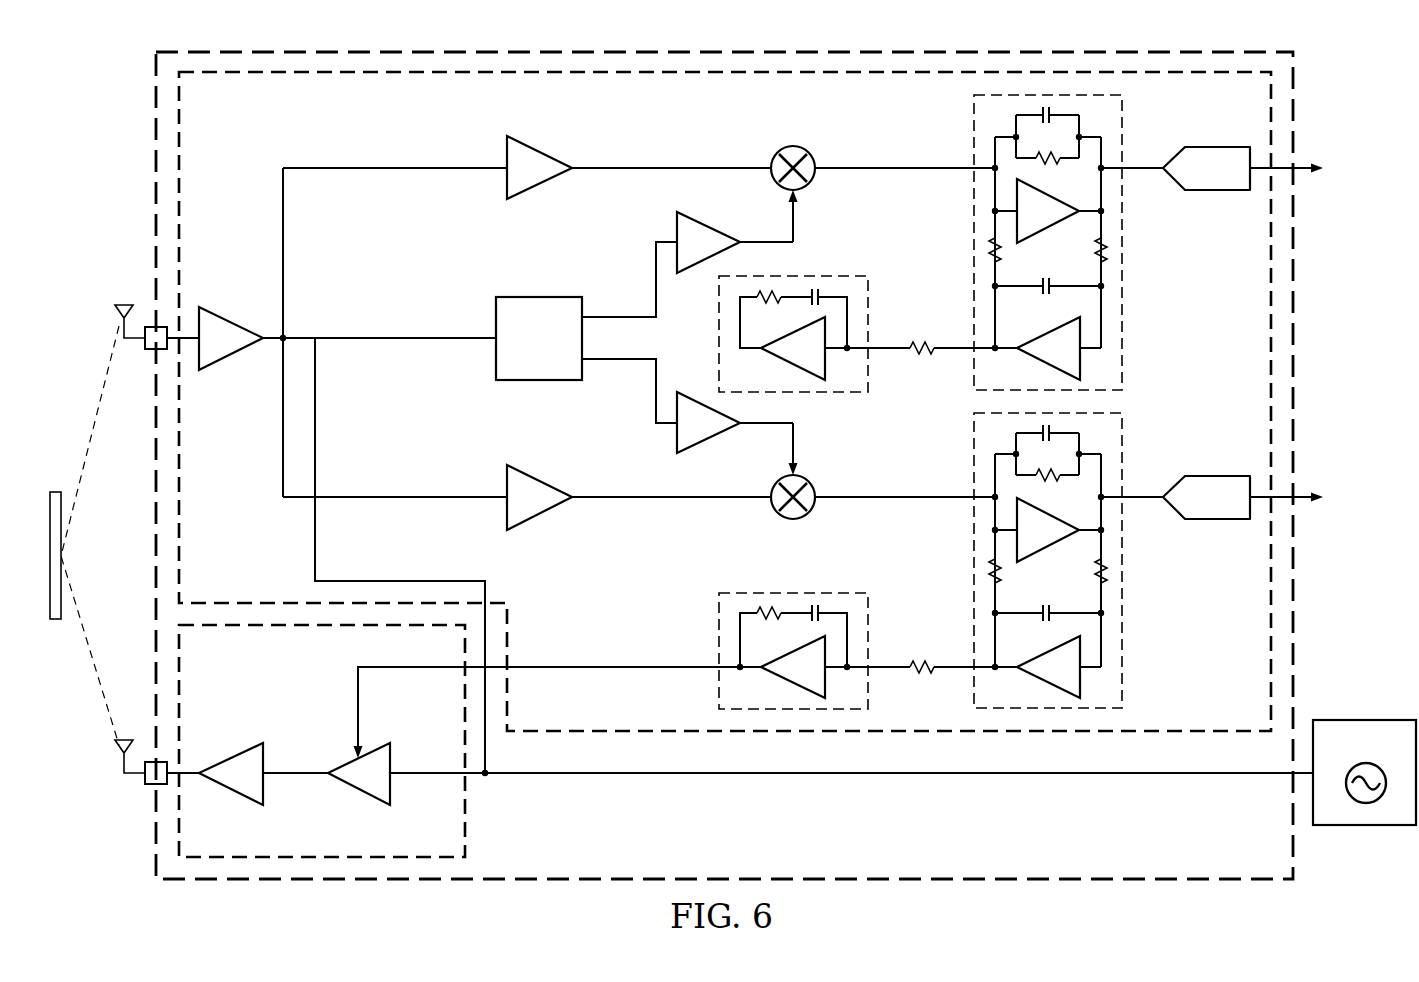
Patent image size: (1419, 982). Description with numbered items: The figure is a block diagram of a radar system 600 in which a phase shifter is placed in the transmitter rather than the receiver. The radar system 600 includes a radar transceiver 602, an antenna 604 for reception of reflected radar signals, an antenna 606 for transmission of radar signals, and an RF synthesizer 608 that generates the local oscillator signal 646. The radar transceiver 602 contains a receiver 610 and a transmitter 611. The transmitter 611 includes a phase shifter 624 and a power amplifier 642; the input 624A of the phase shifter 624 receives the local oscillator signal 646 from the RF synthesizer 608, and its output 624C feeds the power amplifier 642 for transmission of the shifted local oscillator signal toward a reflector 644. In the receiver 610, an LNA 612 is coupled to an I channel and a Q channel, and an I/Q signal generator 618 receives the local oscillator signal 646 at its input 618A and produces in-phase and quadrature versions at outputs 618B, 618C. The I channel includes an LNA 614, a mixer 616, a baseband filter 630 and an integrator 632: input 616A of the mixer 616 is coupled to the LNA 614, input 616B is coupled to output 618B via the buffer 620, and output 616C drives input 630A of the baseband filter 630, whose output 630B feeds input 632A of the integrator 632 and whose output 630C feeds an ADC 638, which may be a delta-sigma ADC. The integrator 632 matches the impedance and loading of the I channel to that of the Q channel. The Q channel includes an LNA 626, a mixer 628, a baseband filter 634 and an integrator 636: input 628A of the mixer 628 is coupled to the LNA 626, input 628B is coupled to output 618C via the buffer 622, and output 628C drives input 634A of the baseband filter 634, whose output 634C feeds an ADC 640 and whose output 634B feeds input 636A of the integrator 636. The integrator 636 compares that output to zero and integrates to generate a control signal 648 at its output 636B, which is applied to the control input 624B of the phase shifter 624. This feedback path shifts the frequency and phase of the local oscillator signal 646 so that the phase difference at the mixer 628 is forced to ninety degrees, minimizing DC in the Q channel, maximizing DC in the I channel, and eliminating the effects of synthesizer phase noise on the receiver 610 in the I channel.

The radar system 600 is at (712, 465).
The radar transceiver 602 is at (1298, 258).
The antenna 604 is at (122, 305).
The antenna 606 is at (116, 757).
The RF synthesizer 608 is at (1368, 825).
The receiver 610 is at (250, 415).
The transmitter 611 is at (472, 808).
The LNA 612 is at (229, 321).
The LNA 614 is at (570, 134).
The mixer 616 is at (785, 148).
The input 616A is at (764, 182).
The input 616B is at (800, 215).
The output 616C is at (822, 161).
The I/Q signal generator 618 is at (536, 297).
The input 618A is at (496, 331).
The output 618B is at (592, 313).
The output 618C is at (590, 381).
The buffer 620 is at (677, 227).
The buffer 622 is at (677, 441).
The phase shifter 624 is at (360, 796).
The input 624A is at (410, 777).
The control input 624B is at (362, 742).
The output 624C is at (318, 771).
The LNA 626 is at (553, 522).
The mixer 628 is at (786, 521).
The input 628A is at (776, 486).
The input 628B is at (798, 453).
The output 628C is at (808, 512).
The baseband filter 630 is at (1128, 232).
The input 630A is at (945, 165).
The output 630B is at (945, 345).
The output 630C is at (1144, 142).
The integrator 632 is at (878, 280).
The input 632A is at (896, 355).
The baseband filter 634 is at (1128, 579).
The input 634A is at (945, 493).
The output 634B is at (945, 665).
The output 634C is at (1141, 505).
The integrator 636 is at (878, 597).
The input 636A is at (896, 675).
The output 636B is at (700, 675).
The ADC 638 is at (1215, 147).
The ADC 640 is at (1222, 519).
The power amplifier 642 is at (231, 795).
The reflector 644 is at (57, 620).
The local oscillator signal 646 is at (315, 568).
The control signal 648 is at (650, 665).